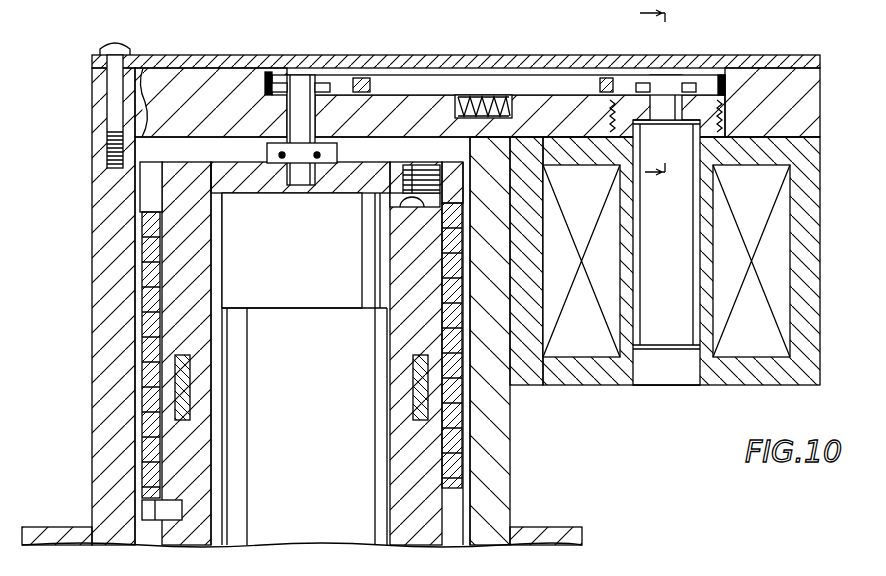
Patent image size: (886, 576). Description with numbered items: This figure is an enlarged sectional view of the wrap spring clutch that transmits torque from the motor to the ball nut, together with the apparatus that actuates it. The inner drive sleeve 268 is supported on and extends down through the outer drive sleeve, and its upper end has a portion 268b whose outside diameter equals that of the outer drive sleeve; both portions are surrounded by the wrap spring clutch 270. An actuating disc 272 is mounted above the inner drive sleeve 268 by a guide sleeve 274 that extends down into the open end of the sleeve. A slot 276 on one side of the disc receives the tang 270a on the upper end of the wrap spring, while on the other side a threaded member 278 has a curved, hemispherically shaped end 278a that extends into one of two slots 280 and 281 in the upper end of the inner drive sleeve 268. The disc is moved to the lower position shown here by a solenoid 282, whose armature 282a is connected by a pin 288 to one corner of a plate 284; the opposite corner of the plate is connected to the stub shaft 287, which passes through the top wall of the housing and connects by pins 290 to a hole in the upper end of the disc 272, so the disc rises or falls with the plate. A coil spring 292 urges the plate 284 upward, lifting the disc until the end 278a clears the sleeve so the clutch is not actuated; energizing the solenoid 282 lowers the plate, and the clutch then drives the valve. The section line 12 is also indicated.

The section line 12- 12 is at (640, 103).
The inner drive sleeve 268 is at (198, 432).
The portion of inner drive sleeve 268b is at (175, 280).
The wrap spring clutch 270 is at (148, 338).
The tang 270a is at (150, 185).
The actuating disc 272 is at (192, 187).
The guide sleeve 274 is at (217, 290).
The slot 276 is at (160, 163).
The threaded member 278 is at (413, 167).
The hemispherically shaped end 278a is at (383, 202).
The slot 280 is at (213, 193).
The slot 281 is at (447, 189).
The solenoid 282 is at (628, 388).
The armature 282a is at (670, 86).
The plate 284 is at (543, 92).
The stub shaft 287 is at (298, 87).
The pin 288 is at (319, 82).
The pins 290 is at (323, 155).
The coil spring 292 is at (484, 97).